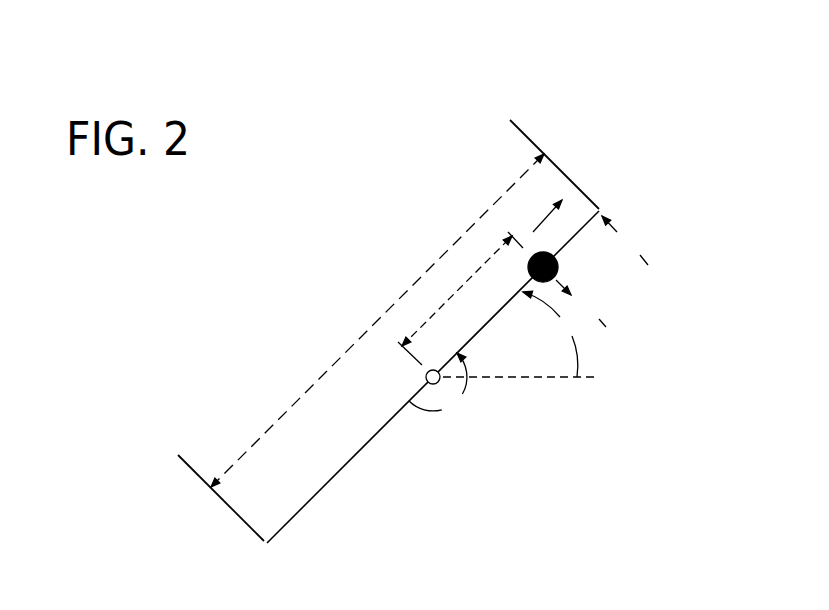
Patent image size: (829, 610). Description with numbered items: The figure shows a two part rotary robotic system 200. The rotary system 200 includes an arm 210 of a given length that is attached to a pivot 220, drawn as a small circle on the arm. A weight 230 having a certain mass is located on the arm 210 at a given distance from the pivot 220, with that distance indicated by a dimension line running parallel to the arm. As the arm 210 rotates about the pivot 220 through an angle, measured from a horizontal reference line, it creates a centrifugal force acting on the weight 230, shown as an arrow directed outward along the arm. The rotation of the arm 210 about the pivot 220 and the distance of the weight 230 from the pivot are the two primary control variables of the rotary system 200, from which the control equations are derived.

The rotary system 200 is at (285, 270).
The arm 210 is at (332, 480).
The pivot 220 is at (427, 377).
The weight 230 is at (558, 265).